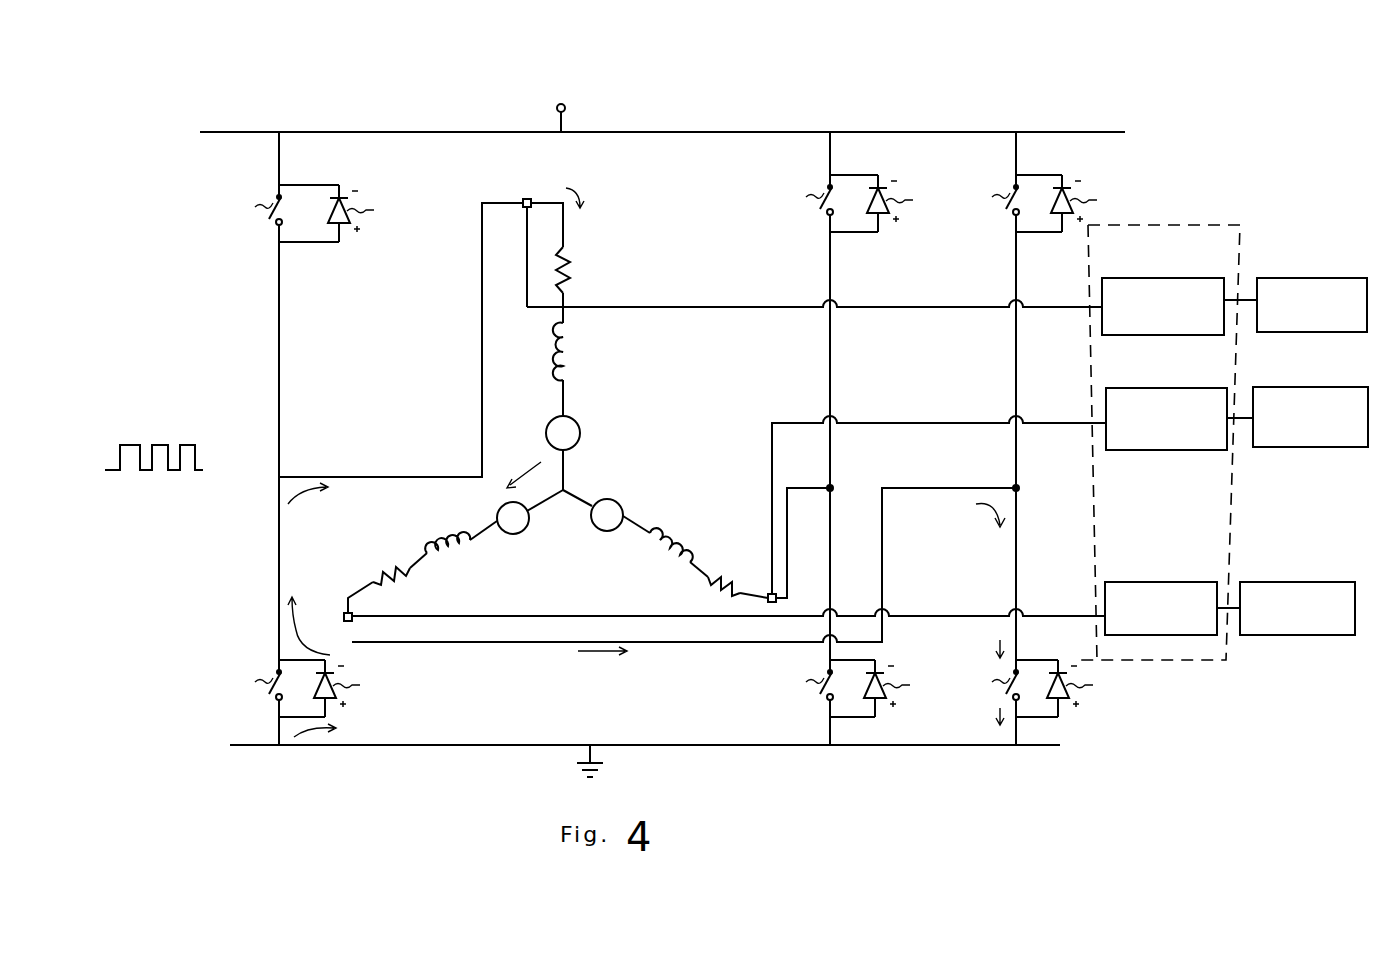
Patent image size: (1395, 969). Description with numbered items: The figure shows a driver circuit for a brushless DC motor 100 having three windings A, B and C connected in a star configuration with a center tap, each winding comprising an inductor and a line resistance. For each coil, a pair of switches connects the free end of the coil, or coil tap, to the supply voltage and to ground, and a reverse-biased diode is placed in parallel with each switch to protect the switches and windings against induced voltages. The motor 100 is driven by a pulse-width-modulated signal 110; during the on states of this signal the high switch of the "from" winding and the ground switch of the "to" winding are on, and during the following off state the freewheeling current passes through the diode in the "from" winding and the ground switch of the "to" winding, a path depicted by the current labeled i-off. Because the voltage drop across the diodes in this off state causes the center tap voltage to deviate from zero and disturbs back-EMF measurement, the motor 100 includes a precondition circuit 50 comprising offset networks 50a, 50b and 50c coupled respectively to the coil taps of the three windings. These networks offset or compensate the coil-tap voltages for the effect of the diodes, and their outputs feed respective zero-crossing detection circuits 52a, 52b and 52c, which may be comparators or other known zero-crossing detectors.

The brushless DC motor 100 is at (828, 90).
The PWM signal 110 is at (163, 434).
The precondition circuit 50 is at (1213, 220).
The network 50a is at (1128, 278).
The zero-crossing detection circuit 52a is at (1293, 278).
The network 50b is at (1128, 388).
The zero-crossing detection circuit 52b is at (1297, 387).
The network 50c is at (1125, 582).
The zero-crossing detection circuit 52c is at (1280, 582).